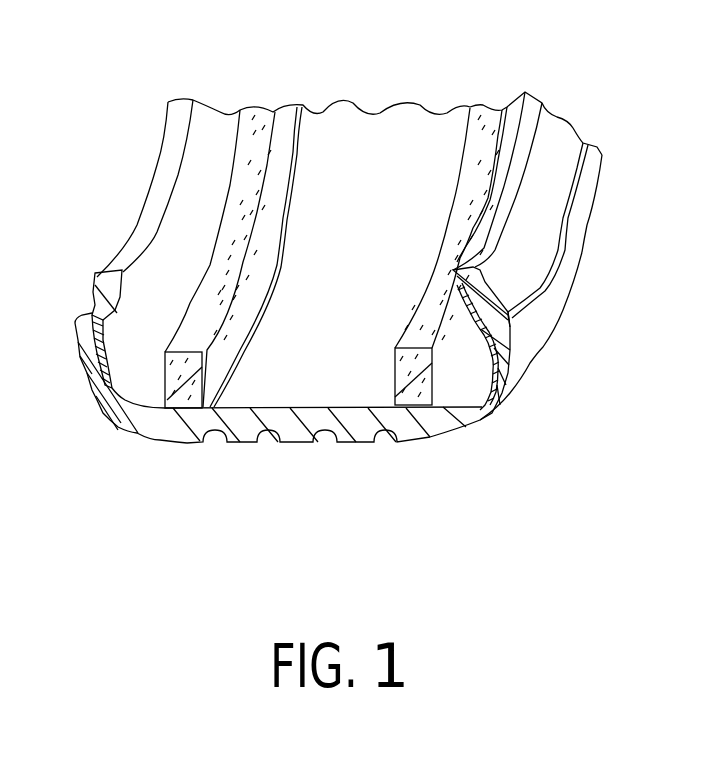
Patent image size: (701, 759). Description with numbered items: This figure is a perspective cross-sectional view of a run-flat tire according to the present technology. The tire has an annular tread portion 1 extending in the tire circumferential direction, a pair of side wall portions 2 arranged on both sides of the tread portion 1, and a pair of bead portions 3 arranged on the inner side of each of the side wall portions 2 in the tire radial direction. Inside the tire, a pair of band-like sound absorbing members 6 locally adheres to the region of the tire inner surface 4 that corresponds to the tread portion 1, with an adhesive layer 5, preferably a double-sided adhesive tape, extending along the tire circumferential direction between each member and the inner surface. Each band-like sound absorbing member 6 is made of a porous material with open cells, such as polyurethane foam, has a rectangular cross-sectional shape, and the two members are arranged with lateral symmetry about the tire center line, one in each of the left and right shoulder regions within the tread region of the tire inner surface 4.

The tread portion 1 is at (303, 443).
The side wall portion 2 is at (80, 377).
The bead portion 3 is at (92, 293).
The tire inner surface 4 is at (137, 407).
The adhesive layer 5 is at (176, 425).
The band-like sound absorbing member 6 is at (262, 128).